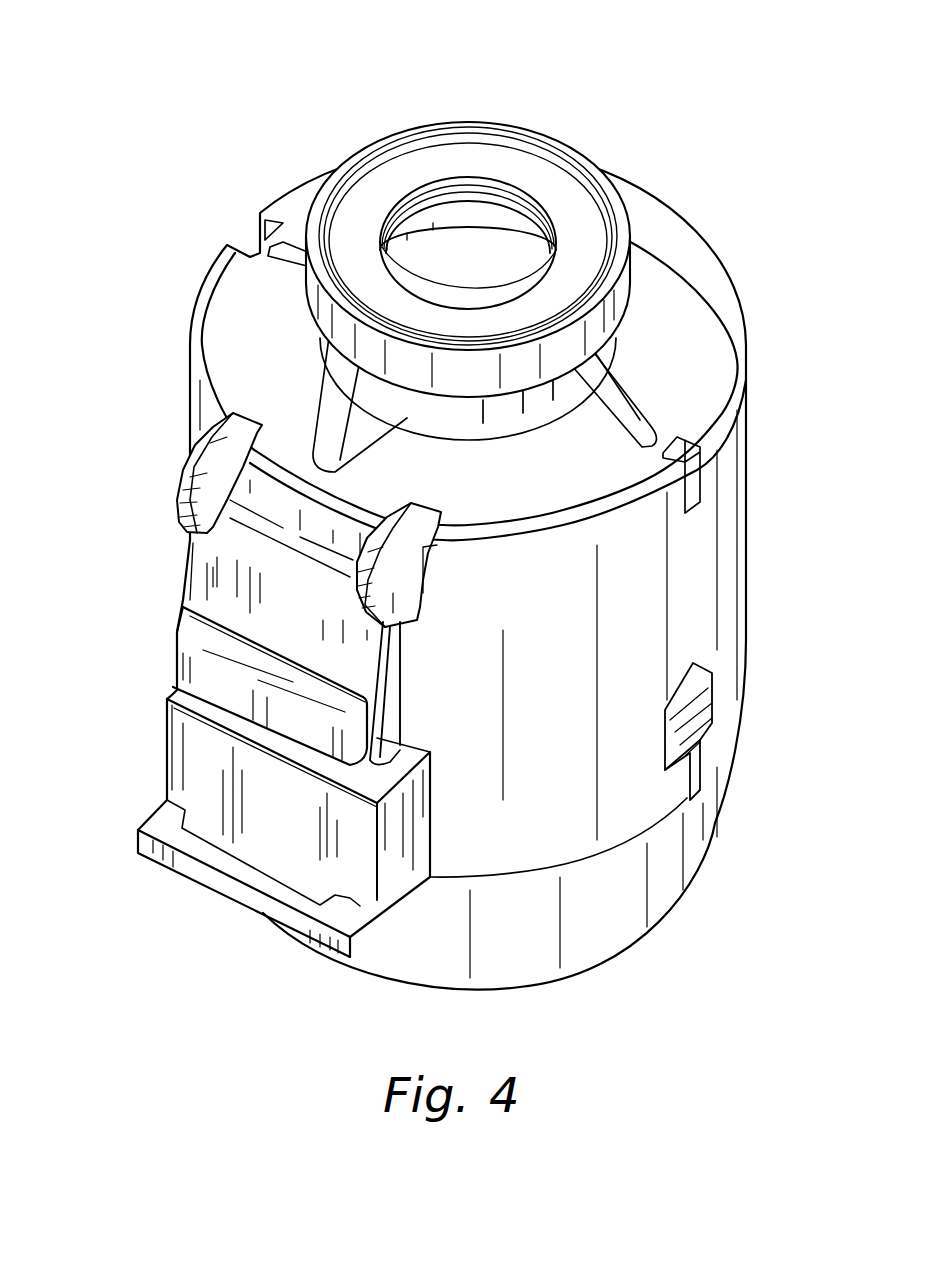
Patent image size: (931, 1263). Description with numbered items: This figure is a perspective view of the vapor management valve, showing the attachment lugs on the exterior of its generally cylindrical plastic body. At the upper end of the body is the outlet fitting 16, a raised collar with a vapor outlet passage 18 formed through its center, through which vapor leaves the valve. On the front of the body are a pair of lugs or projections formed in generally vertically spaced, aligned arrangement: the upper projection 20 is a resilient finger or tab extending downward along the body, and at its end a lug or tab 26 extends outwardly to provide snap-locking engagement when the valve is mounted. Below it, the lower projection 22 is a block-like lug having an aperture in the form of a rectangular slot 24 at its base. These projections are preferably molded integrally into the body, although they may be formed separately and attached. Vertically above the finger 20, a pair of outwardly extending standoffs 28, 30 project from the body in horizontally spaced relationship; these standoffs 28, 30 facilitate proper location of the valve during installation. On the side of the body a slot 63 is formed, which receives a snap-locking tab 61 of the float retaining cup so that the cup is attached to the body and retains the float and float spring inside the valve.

The outlet fitting 16 is at (613, 313).
The vapor outlet passage 18 is at (514, 262).
The upper projection 20 is at (220, 573).
The lower projection 22 is at (200, 758).
The rectangular slot 24 is at (289, 878).
The lug 26 is at (203, 673).
The standoff 28 is at (187, 482).
The standoff 30 is at (412, 560).
The snap-locking tab 61 is at (706, 688).
The slot 63 is at (686, 730).